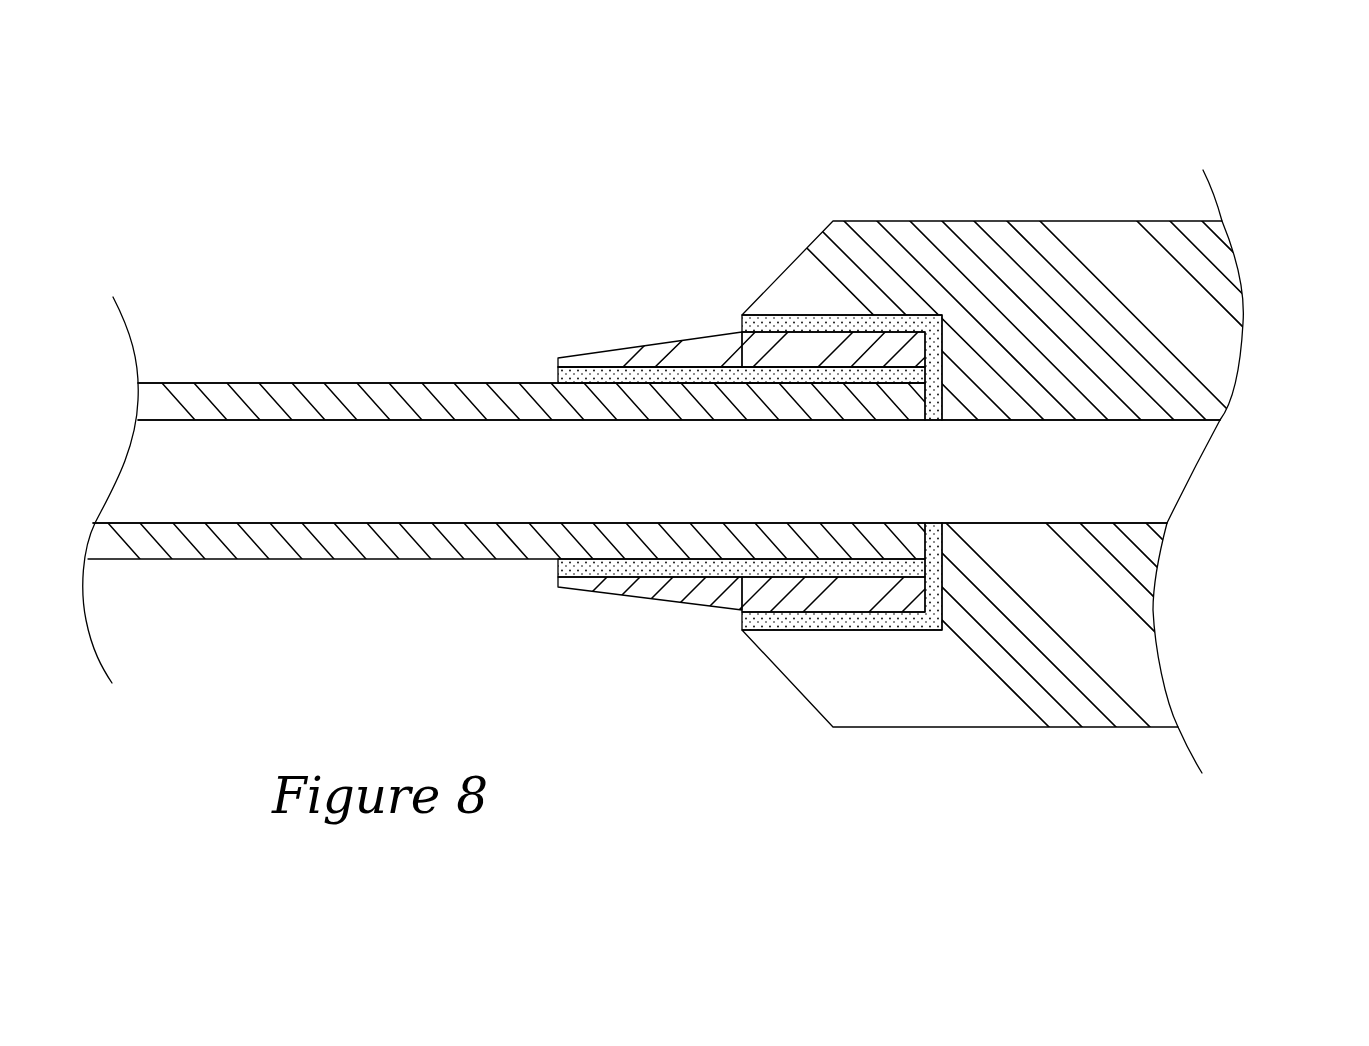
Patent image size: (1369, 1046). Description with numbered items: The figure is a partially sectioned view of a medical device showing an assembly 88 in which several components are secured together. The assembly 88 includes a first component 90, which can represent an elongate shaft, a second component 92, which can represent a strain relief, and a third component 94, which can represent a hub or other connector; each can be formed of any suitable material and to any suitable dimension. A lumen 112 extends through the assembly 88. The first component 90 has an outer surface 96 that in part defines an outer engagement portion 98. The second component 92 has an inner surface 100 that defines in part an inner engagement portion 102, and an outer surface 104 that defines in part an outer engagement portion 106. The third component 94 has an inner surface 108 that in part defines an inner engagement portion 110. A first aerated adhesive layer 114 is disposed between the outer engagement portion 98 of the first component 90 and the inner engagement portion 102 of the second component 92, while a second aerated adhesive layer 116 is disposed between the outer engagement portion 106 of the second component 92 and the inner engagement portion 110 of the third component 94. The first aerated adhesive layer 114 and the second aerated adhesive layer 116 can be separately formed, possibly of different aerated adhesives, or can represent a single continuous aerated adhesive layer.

The assembly 88 is at (726, 427).
The first component 90 is at (252, 397).
The second component 92 is at (642, 600).
The third component 94 is at (1105, 243).
The outer surface 96 is at (432, 382).
The outer engagement portion 98 is at (583, 358).
The inner surface 100 is at (657, 367).
The inner engagement portion 102 is at (711, 375).
The outer surface 104 is at (733, 612).
The outer engagement portion 106 is at (800, 333).
The inner surface 108 is at (945, 372).
The inner engagement portion 110 is at (910, 313).
The lumen 112 is at (257, 497).
The first aerated adhesive layer 114 is at (797, 567).
The second aerated adhesive layer 116 is at (887, 623).